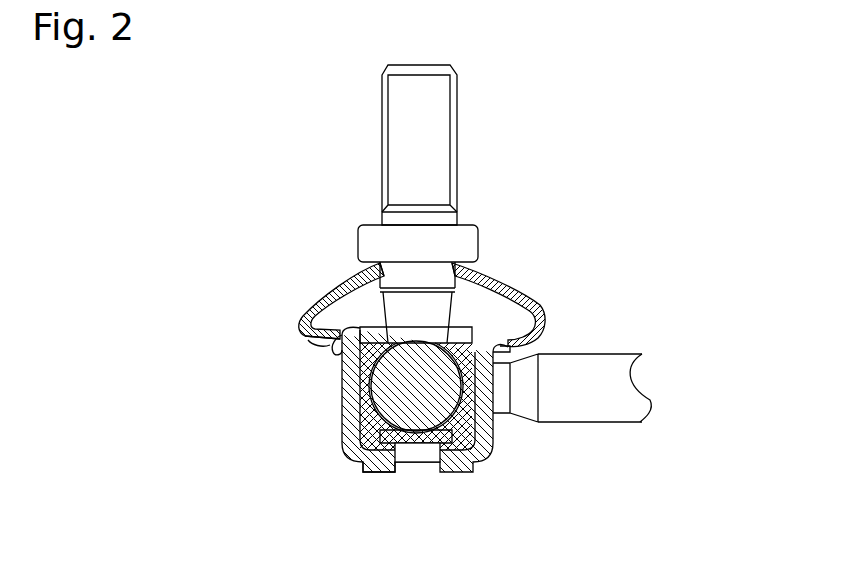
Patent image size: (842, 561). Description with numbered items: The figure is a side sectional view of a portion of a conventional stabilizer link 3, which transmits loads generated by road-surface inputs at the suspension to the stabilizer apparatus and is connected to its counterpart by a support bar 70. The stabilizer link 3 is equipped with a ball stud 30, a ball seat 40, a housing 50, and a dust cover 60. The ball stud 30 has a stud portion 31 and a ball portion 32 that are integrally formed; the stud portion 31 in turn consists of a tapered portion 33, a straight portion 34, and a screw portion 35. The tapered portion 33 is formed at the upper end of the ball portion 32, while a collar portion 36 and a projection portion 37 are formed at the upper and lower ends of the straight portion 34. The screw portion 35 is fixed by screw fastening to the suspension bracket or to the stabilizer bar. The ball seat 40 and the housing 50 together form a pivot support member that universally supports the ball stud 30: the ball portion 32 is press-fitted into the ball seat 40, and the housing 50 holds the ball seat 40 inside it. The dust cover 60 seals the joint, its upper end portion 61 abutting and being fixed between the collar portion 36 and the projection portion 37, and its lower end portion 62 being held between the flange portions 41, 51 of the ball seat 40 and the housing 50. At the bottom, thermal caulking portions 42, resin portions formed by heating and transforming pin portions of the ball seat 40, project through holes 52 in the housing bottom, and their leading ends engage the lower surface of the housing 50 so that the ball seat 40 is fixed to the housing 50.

The stabilizer link 3 is at (478, 106).
The ball stud 30 is at (458, 143).
The stud portion 31 is at (402, 134).
The screw portion 35 is at (455, 176).
The collar portion 36 is at (467, 243).
The straight portion 34 is at (440, 278).
The projection portion 37 is at (437, 318).
The tapered portion 33 is at (540, 303).
The ball portion 32 is at (420, 425).
The ball seat 40 is at (478, 430).
The flange portion 41 is at (303, 332).
The thermal caulking portion 42 is at (390, 465).
The housing 50 is at (350, 428).
The flange portion 51 is at (335, 356).
The hole 52 is at (372, 463).
The dust cover 60 is at (322, 292).
The upper end portion 61 is at (367, 270).
The lower end portion 62 is at (323, 354).
The support bar 70 is at (587, 363).